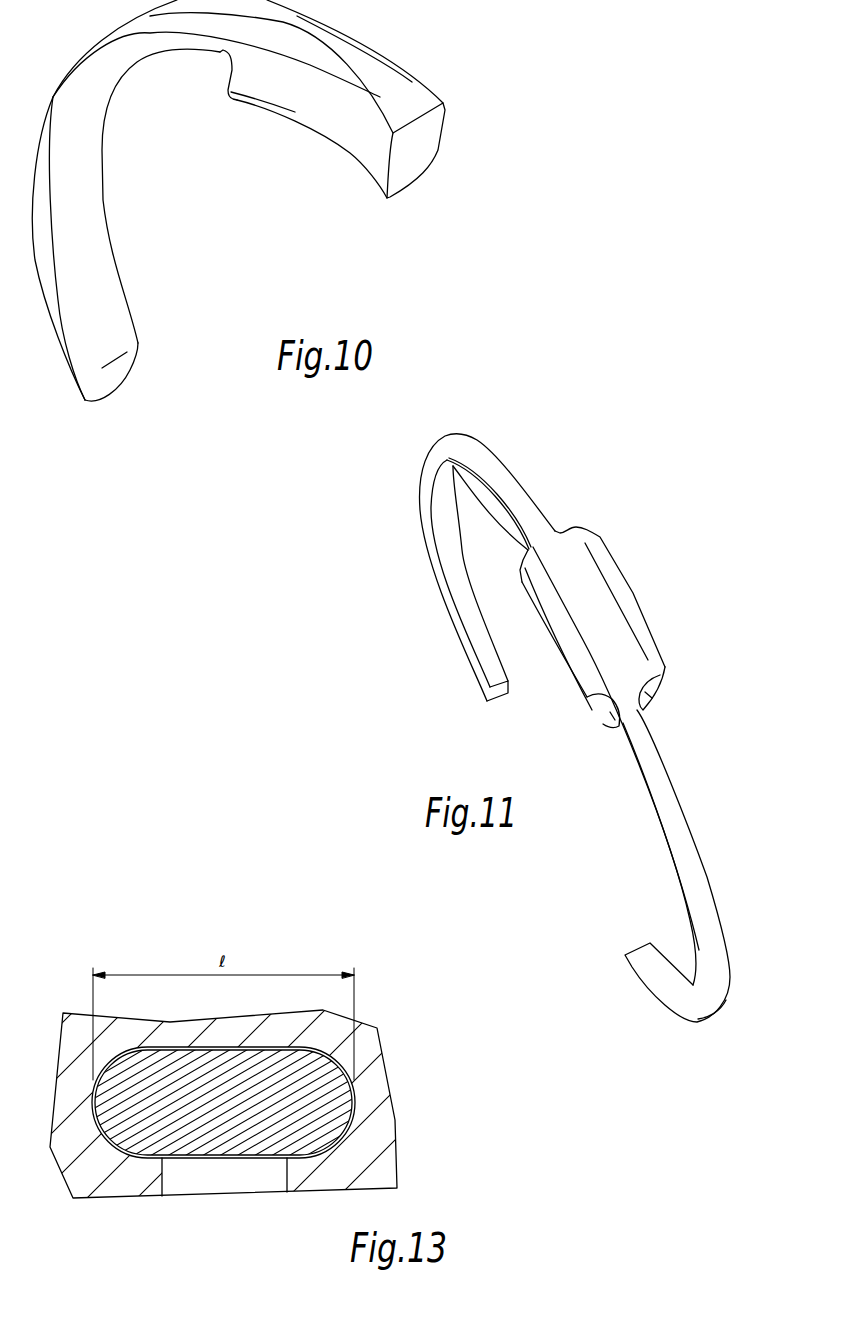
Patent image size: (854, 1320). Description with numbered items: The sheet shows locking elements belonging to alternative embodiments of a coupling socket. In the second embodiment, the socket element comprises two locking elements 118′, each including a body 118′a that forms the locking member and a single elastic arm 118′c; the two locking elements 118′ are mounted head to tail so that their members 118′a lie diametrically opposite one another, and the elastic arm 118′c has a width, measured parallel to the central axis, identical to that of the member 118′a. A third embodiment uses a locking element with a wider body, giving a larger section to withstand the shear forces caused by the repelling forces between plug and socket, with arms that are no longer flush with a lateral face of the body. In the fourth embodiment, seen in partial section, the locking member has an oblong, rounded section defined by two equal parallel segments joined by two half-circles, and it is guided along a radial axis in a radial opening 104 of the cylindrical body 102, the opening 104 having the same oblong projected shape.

In FIG. 10, the locking element 118′ is at (238, 230).
In FIG. 10, the body 118′a is at (320, 107).
In FIG. 10, the elastic arm 118′c is at (72, 243).
In FIG. 13, the cylindrical body 102 is at (373, 1138).
In FIG. 13, the radial opening 104 is at (128, 1144).